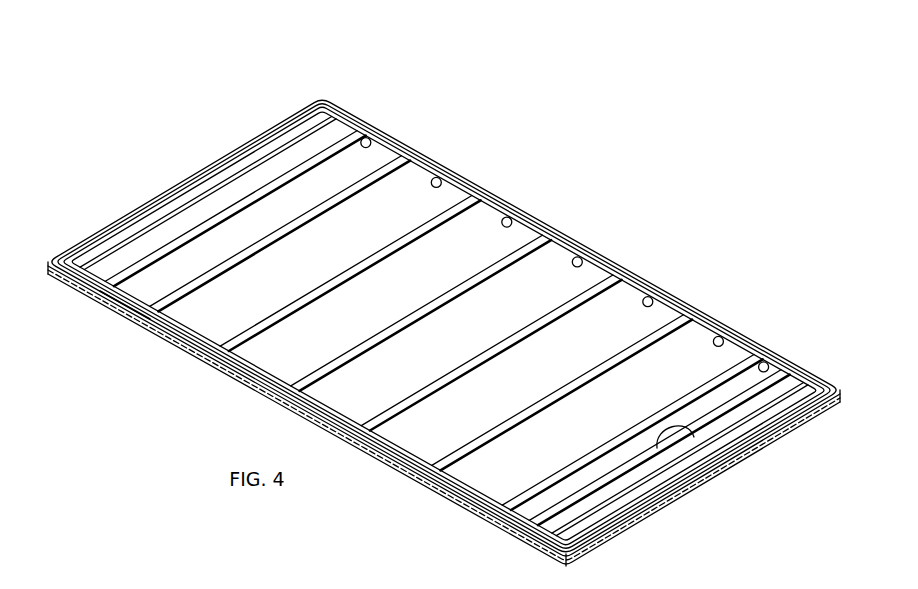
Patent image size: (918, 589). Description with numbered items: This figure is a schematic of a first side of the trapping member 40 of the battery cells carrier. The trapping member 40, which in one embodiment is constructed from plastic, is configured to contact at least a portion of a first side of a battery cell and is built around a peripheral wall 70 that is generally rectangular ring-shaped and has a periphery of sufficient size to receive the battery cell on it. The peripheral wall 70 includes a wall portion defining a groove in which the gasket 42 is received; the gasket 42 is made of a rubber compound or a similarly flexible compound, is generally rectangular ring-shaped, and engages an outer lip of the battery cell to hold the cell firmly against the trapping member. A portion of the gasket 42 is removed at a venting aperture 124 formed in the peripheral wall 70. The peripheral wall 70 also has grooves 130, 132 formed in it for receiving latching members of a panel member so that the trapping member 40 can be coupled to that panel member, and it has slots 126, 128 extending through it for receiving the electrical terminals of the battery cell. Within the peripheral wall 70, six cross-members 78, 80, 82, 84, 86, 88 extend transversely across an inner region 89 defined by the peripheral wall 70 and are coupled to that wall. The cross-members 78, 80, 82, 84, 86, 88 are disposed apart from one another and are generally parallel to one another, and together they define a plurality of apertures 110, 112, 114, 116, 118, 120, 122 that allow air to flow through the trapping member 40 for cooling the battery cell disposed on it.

The trapping member 40 is at (656, 203).
The gasket 42 is at (325, 96).
The peripheral wall 70 is at (697, 328).
The cross-member 78 is at (291, 237).
The cross-member 80 is at (363, 277).
The cross-member 82 is at (431, 315).
The cross-member 84 is at (502, 357).
The cross-member 86 is at (573, 397).
The cross-member 88 is at (577, 476).
The inner region 89 is at (361, 386).
The aperture 110 is at (368, 137).
The aperture 112 is at (439, 177).
The aperture 114 is at (509, 217).
The aperture 116 is at (579, 257).
The aperture 118 is at (650, 297).
The aperture 120 is at (720, 337).
The aperture 122 is at (765, 362).
The venting aperture 124 is at (127, 308).
The slot 126 is at (755, 451).
The slot 128 is at (173, 181).
The groove 130 is at (234, 211).
The groove 132 is at (703, 444).